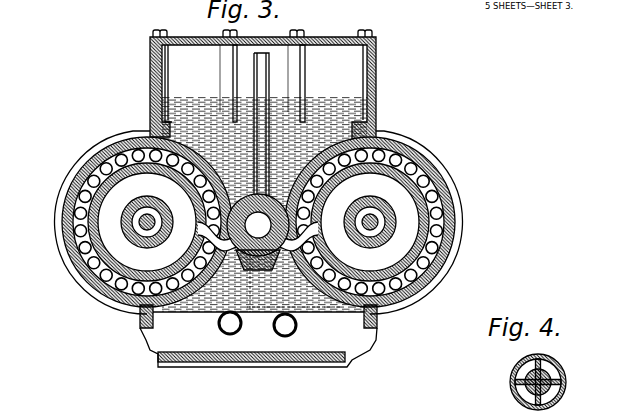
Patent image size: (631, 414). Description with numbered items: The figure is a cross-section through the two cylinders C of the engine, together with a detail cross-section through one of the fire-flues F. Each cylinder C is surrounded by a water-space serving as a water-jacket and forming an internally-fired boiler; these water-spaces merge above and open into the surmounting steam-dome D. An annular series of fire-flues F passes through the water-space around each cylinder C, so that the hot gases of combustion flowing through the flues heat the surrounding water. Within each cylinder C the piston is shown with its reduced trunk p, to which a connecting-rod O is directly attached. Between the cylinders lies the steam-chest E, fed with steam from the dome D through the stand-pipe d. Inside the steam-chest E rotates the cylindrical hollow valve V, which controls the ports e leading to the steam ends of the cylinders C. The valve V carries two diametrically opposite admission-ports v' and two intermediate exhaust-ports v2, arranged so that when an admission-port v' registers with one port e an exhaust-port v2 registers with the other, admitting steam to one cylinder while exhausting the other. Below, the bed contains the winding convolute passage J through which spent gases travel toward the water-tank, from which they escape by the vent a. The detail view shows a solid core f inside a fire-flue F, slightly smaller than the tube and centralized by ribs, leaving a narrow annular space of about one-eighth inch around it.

In FIG. 3, the steam-dome D is at (274, 171).
In FIG. 3, the vent a is at (268, 72).
In FIG. 3, the cylinder C is at (254, 222).
In FIG. 3, the fire-flue F is at (72, 242).
In FIG. 4, the fire-flue F is at (562, 370).
In FIG. 3, the connecting-rod O is at (133, 210).
In FIG. 3, the trunk p is at (257, 242).
In FIG. 3, the port e is at (202, 226).
In FIG. 3, the rotary valve V is at (258, 232).
In FIG. 3, the exhaust-port v2 is at (237, 192).
In FIG. 3, the admission-port v' is at (270, 226).
In FIG. 3, the steam-chest E is at (268, 196).
In FIG. 3, the stand-pipe d is at (284, 284).
In FIG. 3, the convolute passage J is at (330, 352).
In FIG. 4, the core f is at (556, 385).